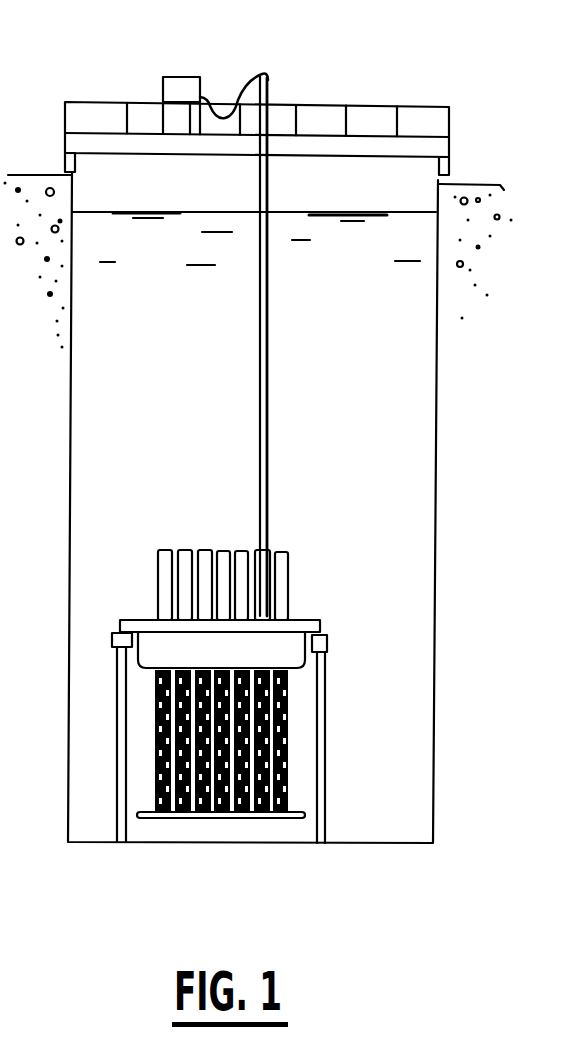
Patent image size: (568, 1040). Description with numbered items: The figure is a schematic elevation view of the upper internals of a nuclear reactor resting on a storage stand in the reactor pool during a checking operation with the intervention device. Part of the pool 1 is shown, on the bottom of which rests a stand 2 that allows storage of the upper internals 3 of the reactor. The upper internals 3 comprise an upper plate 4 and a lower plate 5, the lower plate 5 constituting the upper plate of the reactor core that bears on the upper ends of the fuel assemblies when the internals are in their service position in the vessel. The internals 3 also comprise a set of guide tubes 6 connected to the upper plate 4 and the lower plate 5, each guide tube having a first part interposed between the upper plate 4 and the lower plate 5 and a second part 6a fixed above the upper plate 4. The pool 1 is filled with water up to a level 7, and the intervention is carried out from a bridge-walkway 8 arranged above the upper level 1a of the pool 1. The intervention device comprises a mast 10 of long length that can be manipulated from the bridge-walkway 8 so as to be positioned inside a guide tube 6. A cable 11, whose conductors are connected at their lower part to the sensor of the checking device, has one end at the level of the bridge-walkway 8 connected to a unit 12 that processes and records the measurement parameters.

The pool 1 is at (412, 450).
The upper level of the pool 1a is at (480, 183).
The stand 2 is at (326, 665).
The upper internals 3 is at (206, 690).
The upper plate 4 is at (304, 628).
The lower plate 5 is at (294, 818).
The guide tubes 6 is at (247, 747).
The second part of guide tube 6a is at (286, 562).
The water level 7 is at (304, 212).
The bridge-walkway 8 is at (362, 130).
The mast 10 is at (260, 378).
The cable 11 is at (260, 70).
The unit 12 is at (178, 83).